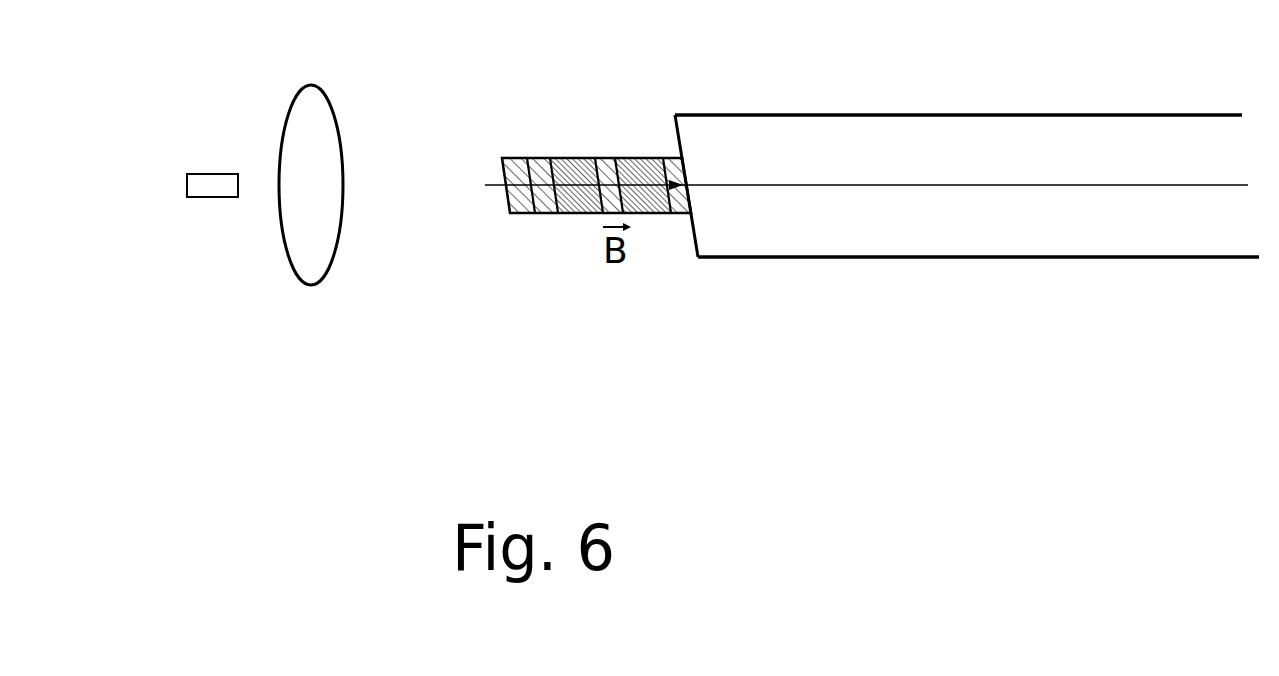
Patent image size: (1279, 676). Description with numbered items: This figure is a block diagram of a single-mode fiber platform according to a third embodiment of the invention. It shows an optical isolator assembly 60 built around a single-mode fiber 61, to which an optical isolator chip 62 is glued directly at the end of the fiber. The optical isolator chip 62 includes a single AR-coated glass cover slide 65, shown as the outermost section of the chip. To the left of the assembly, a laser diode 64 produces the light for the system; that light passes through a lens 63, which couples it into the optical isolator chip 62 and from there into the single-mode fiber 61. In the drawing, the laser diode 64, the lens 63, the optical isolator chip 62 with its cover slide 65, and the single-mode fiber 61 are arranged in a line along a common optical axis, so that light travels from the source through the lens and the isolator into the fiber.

The optical isolator assembly 60 is at (716, 329).
The single-mode fiber 61 is at (858, 243).
The optical isolator chip 62 is at (585, 153).
The lens 63 is at (305, 287).
The laser diode 64 is at (204, 167).
The AR-coated glass cover slide 65 is at (515, 157).